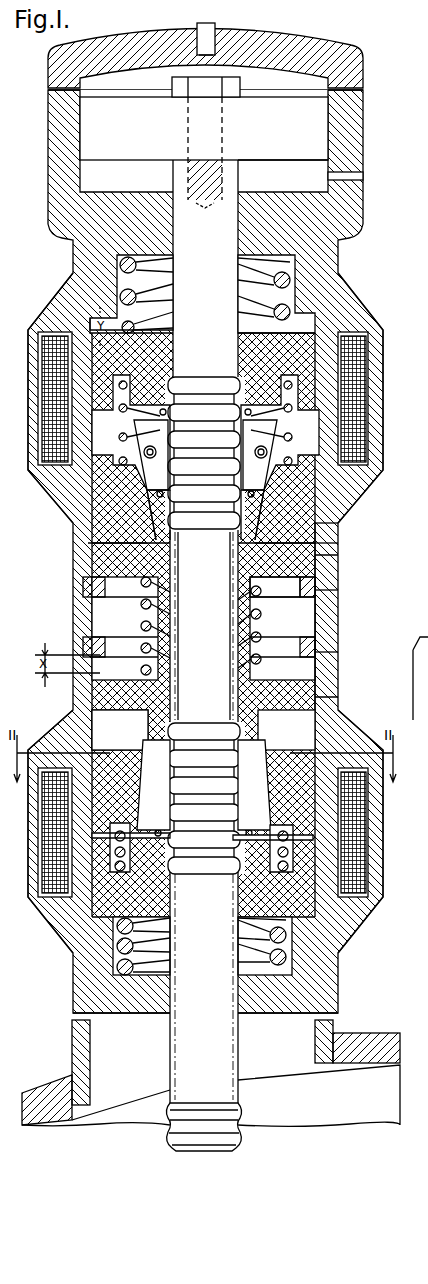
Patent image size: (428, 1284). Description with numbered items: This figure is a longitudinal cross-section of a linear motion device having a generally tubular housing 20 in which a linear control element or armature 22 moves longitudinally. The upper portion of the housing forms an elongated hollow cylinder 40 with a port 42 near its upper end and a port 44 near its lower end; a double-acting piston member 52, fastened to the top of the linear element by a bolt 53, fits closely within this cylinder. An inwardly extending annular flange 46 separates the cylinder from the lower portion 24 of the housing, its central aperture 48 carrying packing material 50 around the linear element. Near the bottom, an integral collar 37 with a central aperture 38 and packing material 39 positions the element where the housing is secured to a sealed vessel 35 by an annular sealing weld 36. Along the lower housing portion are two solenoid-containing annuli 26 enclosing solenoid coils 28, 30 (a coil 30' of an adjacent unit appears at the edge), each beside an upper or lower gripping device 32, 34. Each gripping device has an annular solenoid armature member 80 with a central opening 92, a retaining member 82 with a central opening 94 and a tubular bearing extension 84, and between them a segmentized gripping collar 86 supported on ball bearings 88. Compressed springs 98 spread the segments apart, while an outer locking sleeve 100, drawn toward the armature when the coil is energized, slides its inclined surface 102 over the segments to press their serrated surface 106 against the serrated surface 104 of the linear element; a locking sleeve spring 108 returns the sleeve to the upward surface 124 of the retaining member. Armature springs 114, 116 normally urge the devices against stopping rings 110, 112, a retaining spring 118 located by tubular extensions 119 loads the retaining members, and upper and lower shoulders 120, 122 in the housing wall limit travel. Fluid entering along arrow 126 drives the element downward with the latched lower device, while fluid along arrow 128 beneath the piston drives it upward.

The tubular housing 20 is at (350, 238).
The linear control element 22 is at (170, 714).
The lower portion of the housing 24 is at (336, 618).
The solenoid-containing annuli 26 is at (378, 389).
The solenoid coil 28 is at (355, 424).
The solenoid coil 30 is at (220, 832).
The coil of adjacent unit 30' is at (404, 678).
The upper gripping device 32 is at (315, 540).
The lower gripping device 34 is at (278, 758).
The sealed vessel 35 is at (375, 1033).
The annular sealing weld 36 is at (333, 1025).
The collar 37 is at (274, 1008).
The central aperture 38 is at (158, 1010).
The packing material 39 is at (170, 993).
The hollow cylinder 40 is at (363, 118).
The port 42 is at (206, 25).
The port 44 is at (363, 178).
The annular flange 46 is at (277, 208).
The central aperture 48 is at (244, 226).
The packing material 50 is at (173, 226).
The double-acting piston member 52 is at (290, 114).
The bolt 53 is at (238, 88).
The solenoid armature member 80 is at (258, 352).
The retaining member 82 is at (310, 562).
The tubular bearing extension 84 is at (160, 540).
The segmentized gripping collar 86 is at (313, 442).
The ball bearings 88 is at (150, 458).
The central opening 92 is at (162, 372).
The central opening 94 is at (236, 562).
The compressed spring 98 is at (126, 441).
The outer locking sleeve 100 is at (318, 517).
The inclined surface 102 is at (145, 478).
The serrated surface 104 is at (203, 410).
The serrated surface 106 is at (134, 428).
The locking sleeve spring 108 is at (262, 470).
The stopping ring 110 is at (320, 590).
The stopping ring 112 is at (318, 652).
The armature spring 114 is at (122, 265).
The armature spring 116 is at (170, 948).
The retaining spring 118 is at (140, 622).
The spring positioning tubular extension 119 is at (262, 612).
The upper shoulder 120 is at (305, 318).
The lower shoulder 122 is at (298, 922).
The upward surface 124 is at (275, 587).
The arrow 126 is at (201, 66).
The arrow 128 is at (314, 181).